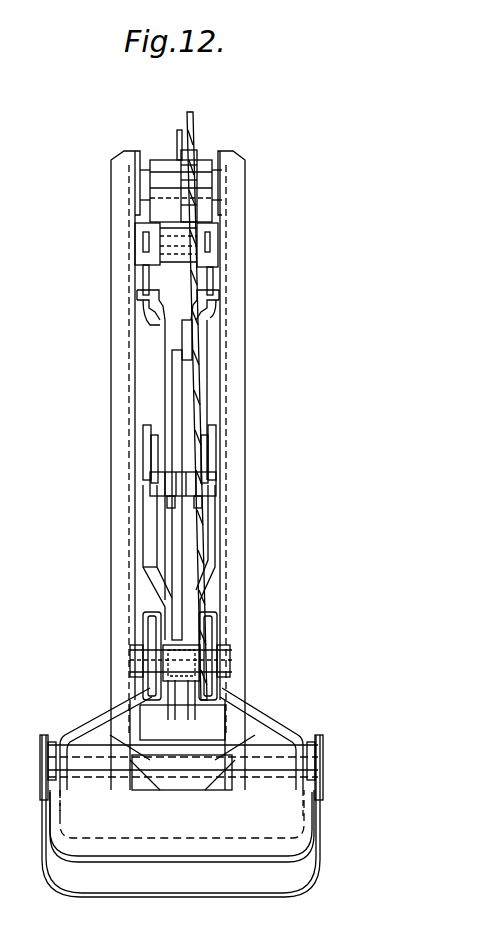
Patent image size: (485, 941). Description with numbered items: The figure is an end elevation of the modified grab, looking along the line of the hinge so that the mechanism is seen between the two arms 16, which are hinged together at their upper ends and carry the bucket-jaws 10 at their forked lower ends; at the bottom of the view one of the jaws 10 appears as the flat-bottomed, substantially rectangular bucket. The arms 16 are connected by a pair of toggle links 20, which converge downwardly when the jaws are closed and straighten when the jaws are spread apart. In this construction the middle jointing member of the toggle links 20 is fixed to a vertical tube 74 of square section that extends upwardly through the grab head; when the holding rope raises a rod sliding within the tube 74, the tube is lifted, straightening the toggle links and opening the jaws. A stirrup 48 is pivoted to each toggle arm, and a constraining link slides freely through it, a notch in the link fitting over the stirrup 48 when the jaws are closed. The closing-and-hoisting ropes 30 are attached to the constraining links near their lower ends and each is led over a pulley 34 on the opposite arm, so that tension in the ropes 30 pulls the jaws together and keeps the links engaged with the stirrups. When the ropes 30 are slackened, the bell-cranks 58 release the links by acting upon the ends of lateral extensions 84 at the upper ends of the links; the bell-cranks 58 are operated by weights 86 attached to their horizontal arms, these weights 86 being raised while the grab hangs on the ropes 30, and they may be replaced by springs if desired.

The bucket-jaw 10 is at (318, 862).
The arm 16 is at (237, 447).
The toggle link 20 is at (150, 552).
The closing-and-hoisting rope 30 is at (200, 385).
The pulley 34 is at (163, 625).
The stirrup 48 is at (175, 483).
The bell-crank 58 is at (163, 271).
The vertical tube 74 is at (168, 363).
The lateral extension 84 is at (150, 323).
The weight 86 is at (147, 240).